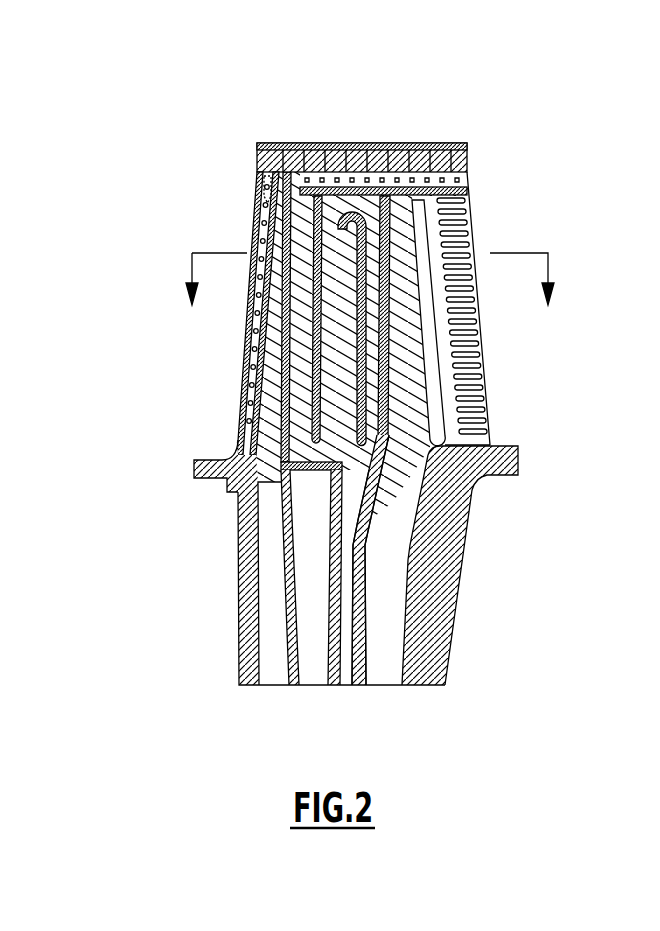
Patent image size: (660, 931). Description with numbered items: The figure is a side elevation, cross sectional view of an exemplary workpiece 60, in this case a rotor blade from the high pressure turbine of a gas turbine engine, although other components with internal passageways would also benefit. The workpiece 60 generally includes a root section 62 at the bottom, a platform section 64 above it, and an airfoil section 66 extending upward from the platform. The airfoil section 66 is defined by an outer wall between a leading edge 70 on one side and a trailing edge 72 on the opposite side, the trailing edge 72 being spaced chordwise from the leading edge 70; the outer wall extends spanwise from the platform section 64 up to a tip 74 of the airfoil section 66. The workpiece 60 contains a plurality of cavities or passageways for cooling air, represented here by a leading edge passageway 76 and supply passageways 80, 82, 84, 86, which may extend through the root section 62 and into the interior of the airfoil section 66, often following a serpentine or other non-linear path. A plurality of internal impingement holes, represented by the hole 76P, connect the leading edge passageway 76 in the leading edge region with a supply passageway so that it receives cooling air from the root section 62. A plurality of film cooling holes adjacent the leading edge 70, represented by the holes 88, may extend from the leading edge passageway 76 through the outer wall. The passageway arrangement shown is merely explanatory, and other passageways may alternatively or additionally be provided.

The workpiece 60 is at (546, 122).
The root section 62 is at (226, 600).
The platform section 64 is at (182, 469).
The airfoil section 66 is at (200, 368).
The leading edge 70 is at (262, 212).
The trailing edge 72 is at (474, 200).
The tip 74 is at (352, 143).
The leading edge passageway 76 is at (248, 425).
The internal impingement hole 76P is at (263, 190).
The supply passageway 80 is at (277, 675).
The supply passageway 82 is at (315, 676).
The supply passageway 84 is at (342, 676).
The supply passageway 86 is at (388, 676).
The film cooling holes 88 is at (257, 231).